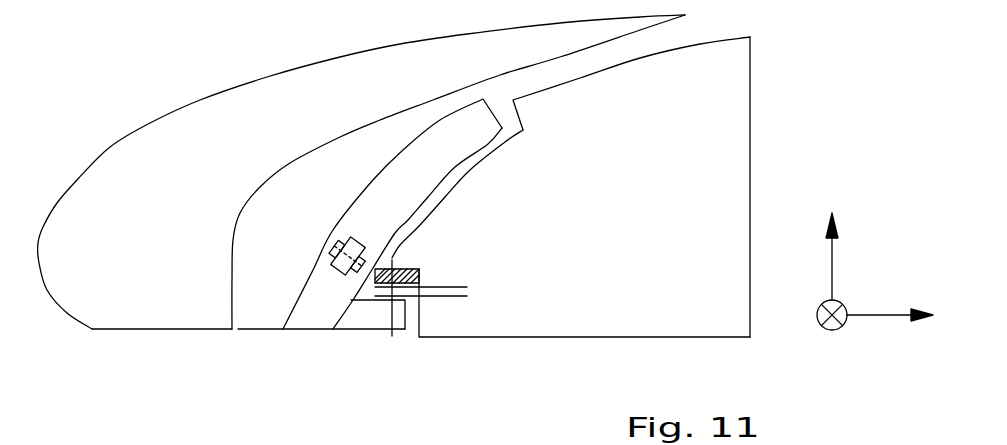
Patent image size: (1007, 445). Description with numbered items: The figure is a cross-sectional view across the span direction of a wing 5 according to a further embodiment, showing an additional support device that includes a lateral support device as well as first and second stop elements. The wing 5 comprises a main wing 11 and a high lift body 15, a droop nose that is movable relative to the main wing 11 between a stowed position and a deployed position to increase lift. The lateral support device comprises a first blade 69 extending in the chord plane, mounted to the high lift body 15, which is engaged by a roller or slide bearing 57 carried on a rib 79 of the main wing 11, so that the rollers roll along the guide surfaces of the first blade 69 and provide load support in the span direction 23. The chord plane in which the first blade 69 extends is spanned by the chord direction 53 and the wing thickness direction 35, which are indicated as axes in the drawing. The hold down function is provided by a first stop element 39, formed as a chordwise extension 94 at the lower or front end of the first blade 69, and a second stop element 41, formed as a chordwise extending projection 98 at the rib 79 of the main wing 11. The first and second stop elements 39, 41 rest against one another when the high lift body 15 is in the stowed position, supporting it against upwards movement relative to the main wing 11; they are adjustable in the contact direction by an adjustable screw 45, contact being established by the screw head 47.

The wing 5 is at (108, 70).
The high lift body 15 is at (186, 207).
The first blade 69 is at (467, 138).
The rib 79 is at (681, 207).
The main wing 11 is at (798, 207).
The roller or slide bearing 57 is at (364, 246).
The adjustable screw 45 is at (390, 267).
The second stop element 41 is at (464, 267).
The chordwise extending projection 98 is at (421, 272).
The screw head 47 is at (467, 296).
The first stop element 39 is at (411, 352).
The chordwise extension 94 is at (397, 325).
The span direction 23 is at (825, 329).
The wing thickness direction 35 is at (833, 257).
The chord direction 53 is at (888, 315).